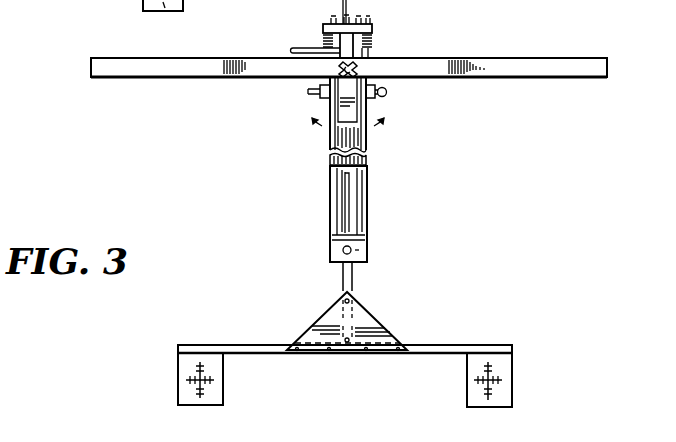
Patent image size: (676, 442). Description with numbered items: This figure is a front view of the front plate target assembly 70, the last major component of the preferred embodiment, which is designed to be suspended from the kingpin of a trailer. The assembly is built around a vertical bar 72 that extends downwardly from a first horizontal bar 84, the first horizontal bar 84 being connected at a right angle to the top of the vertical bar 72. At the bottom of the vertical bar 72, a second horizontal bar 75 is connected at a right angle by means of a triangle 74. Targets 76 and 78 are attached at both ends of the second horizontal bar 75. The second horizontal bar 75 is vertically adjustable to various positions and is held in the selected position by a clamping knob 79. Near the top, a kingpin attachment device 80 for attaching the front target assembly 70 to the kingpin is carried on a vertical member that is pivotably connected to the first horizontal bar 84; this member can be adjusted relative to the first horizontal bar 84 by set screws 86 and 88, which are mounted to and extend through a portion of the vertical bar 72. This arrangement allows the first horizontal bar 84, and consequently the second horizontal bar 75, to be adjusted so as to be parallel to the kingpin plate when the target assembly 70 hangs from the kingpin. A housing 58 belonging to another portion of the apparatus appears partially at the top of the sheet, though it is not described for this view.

The housing 58 is at (184, 9).
The front plate target assembly 70 is at (408, 44).
The vertical bar 72 is at (368, 177).
The triangle 74 is at (365, 323).
The second horizontal bar 75 is at (432, 346).
The target 76 is at (184, 372).
The target 78 is at (510, 375).
The clamping knob 79 is at (336, 68).
The kingpin attachment device 80 is at (380, 28).
The first horizontal bar 84 is at (522, 73).
The set screw 86 is at (313, 93).
The set screw 88 is at (387, 93).